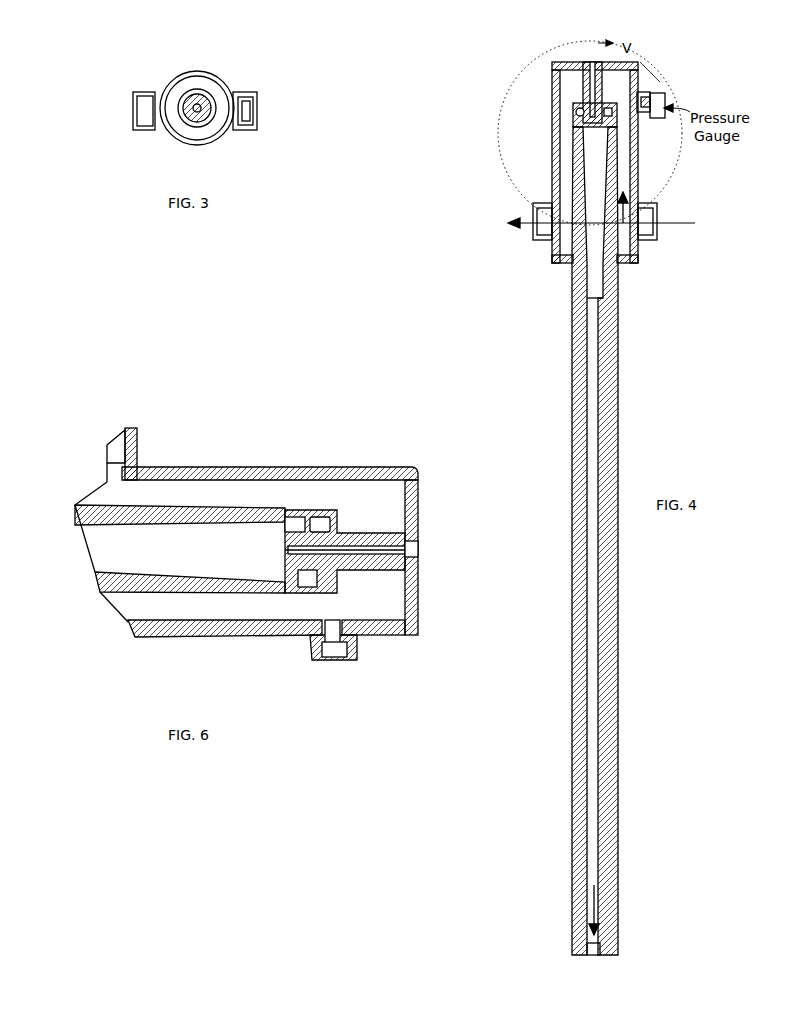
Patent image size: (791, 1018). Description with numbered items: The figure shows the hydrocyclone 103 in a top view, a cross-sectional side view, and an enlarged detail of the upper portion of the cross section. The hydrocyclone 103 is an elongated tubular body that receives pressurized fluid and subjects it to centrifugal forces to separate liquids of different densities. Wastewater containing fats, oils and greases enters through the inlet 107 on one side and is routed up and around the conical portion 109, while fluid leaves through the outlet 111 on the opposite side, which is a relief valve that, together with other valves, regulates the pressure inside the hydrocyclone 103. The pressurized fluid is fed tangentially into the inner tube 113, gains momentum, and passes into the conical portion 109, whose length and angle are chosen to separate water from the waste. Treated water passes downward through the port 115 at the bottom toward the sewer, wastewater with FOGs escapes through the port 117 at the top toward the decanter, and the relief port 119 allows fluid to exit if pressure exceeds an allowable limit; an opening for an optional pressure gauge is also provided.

In FIG. 3, the hydrocyclone 103 is at (230, 57).
In FIG. 4, the hydrocyclone 103 is at (684, 41).
In FIG. 6, the hydrocyclone 103 is at (318, 460).
In FIG. 3, the inlet 107 is at (243, 132).
In FIG. 4, the inlet 107 is at (650, 243).
In FIG. 4, the conical portion 109 is at (607, 155).
In FIG. 6, the conical portion 109 is at (200, 561).
In FIG. 3, the outlet 111 is at (143, 132).
In FIG. 4, the outlet 111 is at (538, 242).
In FIG. 6, the outlet 111 is at (140, 446).
In FIG. 3, the inner tube 113 is at (187, 105).
In FIG. 4, the inner tube 113 is at (580, 106).
In FIG. 6, the inner tube 113 is at (320, 508).
In FIG. 4, the port 115 is at (594, 954).
In FIG. 4, the port 117 is at (590, 52).
In FIG. 6, the port 117 is at (428, 552).
In FIG. 4, the relief port 119 is at (658, 86).
In FIG. 6, the relief port 119 is at (334, 670).